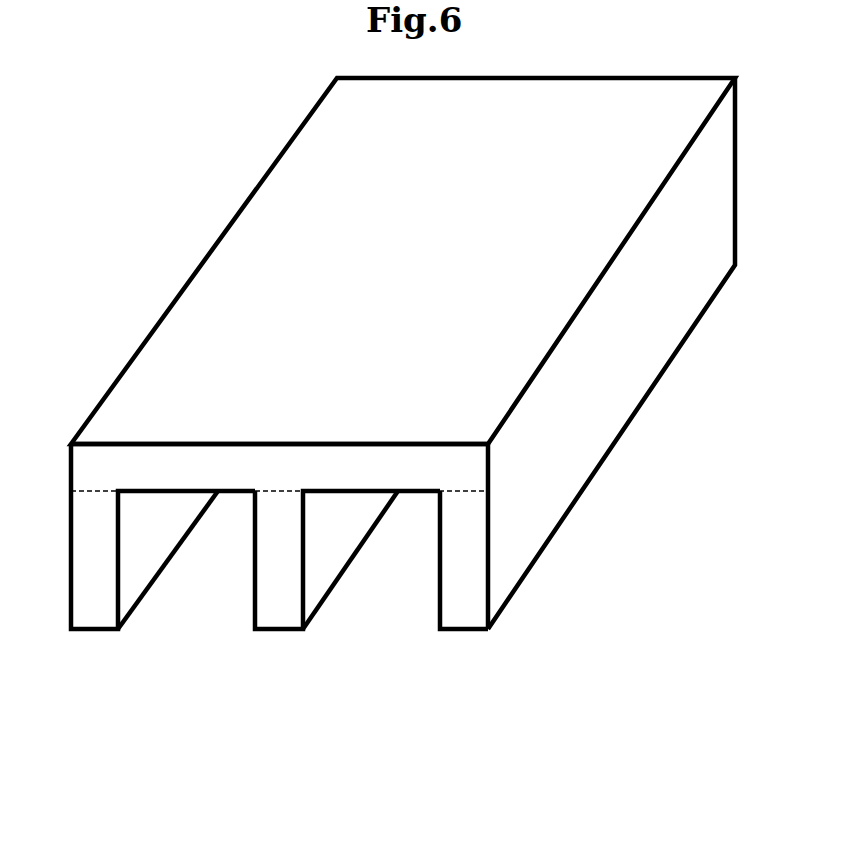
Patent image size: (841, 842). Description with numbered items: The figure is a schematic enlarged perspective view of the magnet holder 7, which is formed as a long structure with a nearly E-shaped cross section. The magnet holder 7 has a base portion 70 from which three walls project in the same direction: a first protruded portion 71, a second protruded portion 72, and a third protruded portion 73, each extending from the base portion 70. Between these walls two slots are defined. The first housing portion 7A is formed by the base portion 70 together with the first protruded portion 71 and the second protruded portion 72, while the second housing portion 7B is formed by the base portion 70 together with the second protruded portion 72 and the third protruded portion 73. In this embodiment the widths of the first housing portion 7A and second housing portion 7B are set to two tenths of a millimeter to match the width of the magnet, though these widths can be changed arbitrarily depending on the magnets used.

The magnet holder 7 is at (170, 234).
The base portion 70 is at (408, 475).
The first protruded portion 71 is at (90, 603).
The second protruded portion 72 is at (278, 603).
The third protruded portion 73 is at (467, 602).
The first housing portion 7A is at (200, 600).
The second housing portion 7B is at (388, 602).